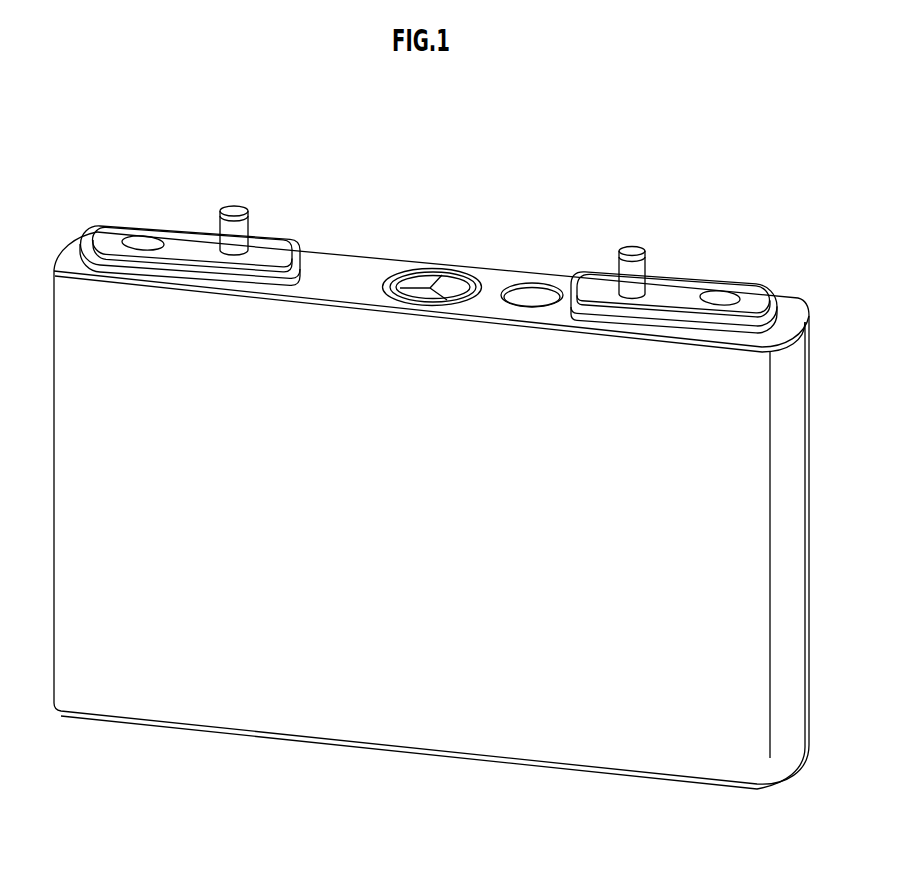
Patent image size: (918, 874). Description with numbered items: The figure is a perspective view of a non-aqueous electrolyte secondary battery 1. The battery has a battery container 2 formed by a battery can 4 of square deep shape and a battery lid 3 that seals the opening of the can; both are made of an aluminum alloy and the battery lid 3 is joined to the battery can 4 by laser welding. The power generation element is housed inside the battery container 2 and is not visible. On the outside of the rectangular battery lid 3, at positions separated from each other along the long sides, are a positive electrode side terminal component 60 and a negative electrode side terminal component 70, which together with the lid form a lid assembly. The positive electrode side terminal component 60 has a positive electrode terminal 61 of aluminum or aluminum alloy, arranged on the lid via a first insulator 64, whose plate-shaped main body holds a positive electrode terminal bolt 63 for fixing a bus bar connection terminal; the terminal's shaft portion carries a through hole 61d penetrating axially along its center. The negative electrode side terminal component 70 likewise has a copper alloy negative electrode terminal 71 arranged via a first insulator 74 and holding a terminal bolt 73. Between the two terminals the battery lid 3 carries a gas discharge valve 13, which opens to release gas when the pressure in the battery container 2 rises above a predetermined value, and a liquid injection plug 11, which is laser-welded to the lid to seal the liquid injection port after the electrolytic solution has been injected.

The non-aqueous electrolyte secondary battery 1 is at (588, 145).
The battery container 2 is at (373, 203).
The battery lid 3 is at (320, 262).
The battery can 4 is at (354, 325).
The liquid injection plug 11 is at (537, 284).
The gas discharge valve 13 is at (432, 271).
The positive electrode side terminal component 60 is at (169, 161).
The positive electrode terminal 61 is at (193, 235).
The through hole 61d is at (143, 236).
The positive electrode terminal bolt 63 is at (230, 206).
The first insulator 64 is at (97, 260).
The negative electrode side terminal component 70 is at (749, 225).
The negative electrode terminal 71 is at (675, 285).
The terminal bolt 73 is at (628, 250).
The first insulator 74 is at (745, 328).